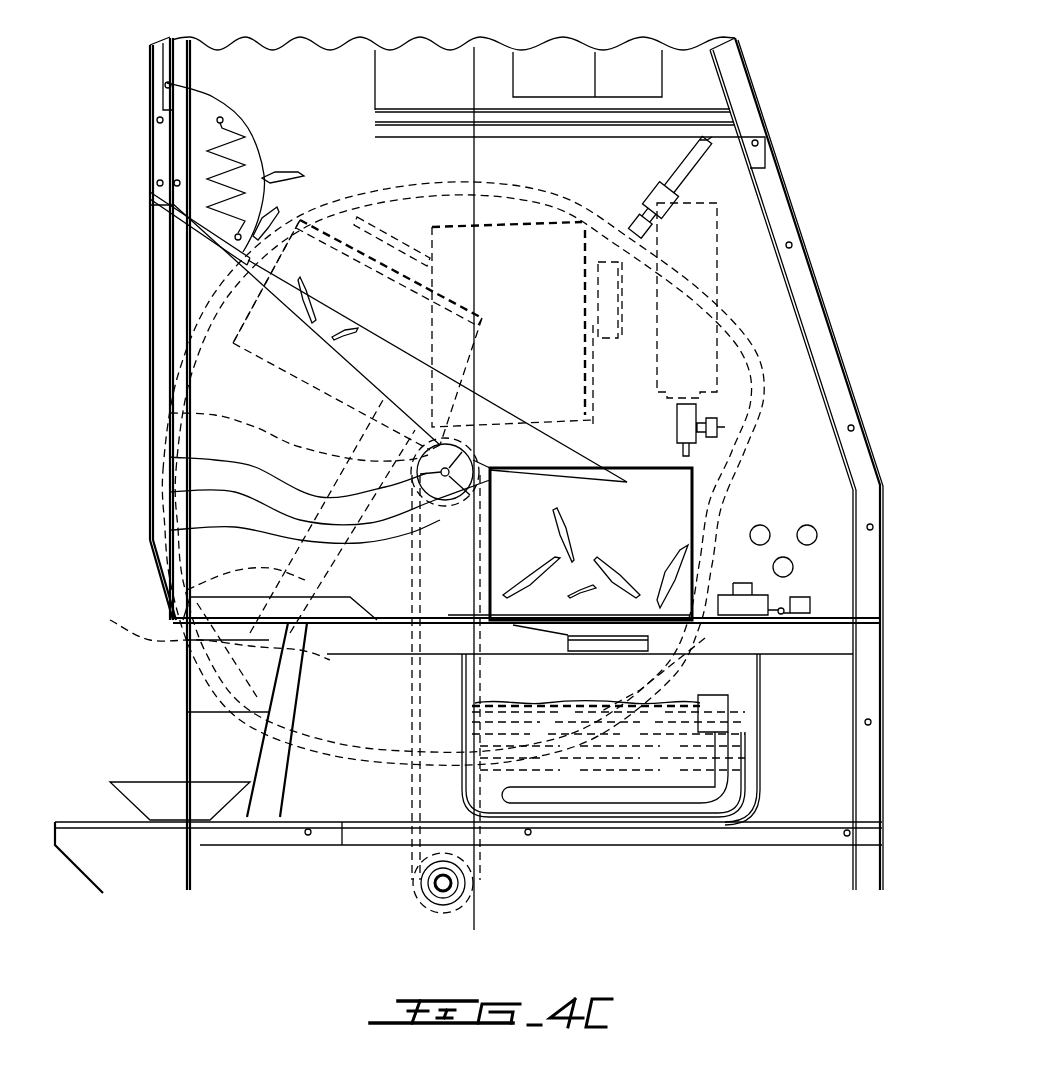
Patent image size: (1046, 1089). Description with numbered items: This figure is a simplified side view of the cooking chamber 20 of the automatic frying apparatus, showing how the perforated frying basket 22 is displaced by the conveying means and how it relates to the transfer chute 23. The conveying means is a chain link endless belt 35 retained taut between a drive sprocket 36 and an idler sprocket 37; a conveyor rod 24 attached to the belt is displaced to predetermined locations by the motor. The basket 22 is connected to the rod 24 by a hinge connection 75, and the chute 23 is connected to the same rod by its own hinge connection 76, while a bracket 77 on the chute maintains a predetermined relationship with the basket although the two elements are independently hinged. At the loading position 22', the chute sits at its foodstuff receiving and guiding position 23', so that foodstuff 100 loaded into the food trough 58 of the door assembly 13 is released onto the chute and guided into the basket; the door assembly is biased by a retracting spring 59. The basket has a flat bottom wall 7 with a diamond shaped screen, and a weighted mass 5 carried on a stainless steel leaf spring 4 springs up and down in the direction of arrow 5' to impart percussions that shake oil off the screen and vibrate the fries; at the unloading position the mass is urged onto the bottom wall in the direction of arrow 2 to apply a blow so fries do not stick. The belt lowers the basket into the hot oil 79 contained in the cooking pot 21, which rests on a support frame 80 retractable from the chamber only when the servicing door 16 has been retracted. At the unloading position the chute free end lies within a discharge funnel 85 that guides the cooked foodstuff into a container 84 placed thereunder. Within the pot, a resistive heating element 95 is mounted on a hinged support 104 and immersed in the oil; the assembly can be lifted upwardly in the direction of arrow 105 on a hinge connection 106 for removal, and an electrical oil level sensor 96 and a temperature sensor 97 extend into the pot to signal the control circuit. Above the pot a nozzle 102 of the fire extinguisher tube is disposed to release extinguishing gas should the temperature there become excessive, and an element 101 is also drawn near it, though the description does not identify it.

The arrow 2 is at (414, 233).
The stainless steel leaf spring 4 is at (547, 222).
The weighted mass 5 is at (528, 419).
The arrow 5' is at (617, 638).
The flat bottom wall 7 is at (376, 290).
The door assembly 13 is at (207, 103).
The servicing door 16 is at (148, 326).
The cooking chamber 20 is at (777, 417).
The cooking pot 21 is at (760, 750).
The perforated frying basket 22 is at (463, 454).
The loading position of the frying basket 22' is at (696, 580).
The transfer chute 23 is at (213, 576).
The foodstuff receiving and guiding position of the chute 23' is at (204, 503).
The conveyor rod 24 is at (490, 477).
The chain link endless belt 35 is at (405, 868).
The drive sprocket 36 is at (477, 883).
The idler sprocket 37 is at (170, 458).
The food trough 58 is at (200, 160).
The retracting spring 59 is at (240, 183).
The hinge connection 75 is at (170, 413).
The hinge connection 76 is at (470, 382).
The bracket 77 is at (170, 492).
The hot oil 79 is at (700, 697).
The support frame 80 is at (833, 622).
The container 84 is at (150, 795).
The discharge funnel 85 is at (205, 680).
The resistive heating element 95 is at (625, 793).
The electrical oil level sensor 96 is at (710, 695).
The temperature sensor 97 is at (750, 765).
The foodstuff 100 is at (230, 345).
The nozzle 101 is at (677, 168).
The nozzle 102 is at (650, 190).
The hinged support 104 is at (778, 608).
The arrow 105 is at (803, 519).
The hinge connection 106 is at (782, 615).